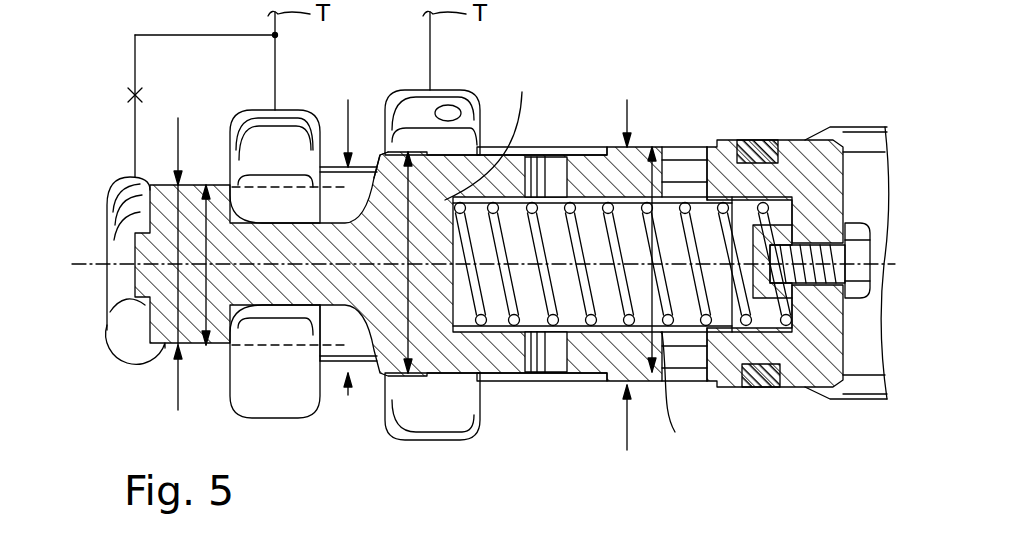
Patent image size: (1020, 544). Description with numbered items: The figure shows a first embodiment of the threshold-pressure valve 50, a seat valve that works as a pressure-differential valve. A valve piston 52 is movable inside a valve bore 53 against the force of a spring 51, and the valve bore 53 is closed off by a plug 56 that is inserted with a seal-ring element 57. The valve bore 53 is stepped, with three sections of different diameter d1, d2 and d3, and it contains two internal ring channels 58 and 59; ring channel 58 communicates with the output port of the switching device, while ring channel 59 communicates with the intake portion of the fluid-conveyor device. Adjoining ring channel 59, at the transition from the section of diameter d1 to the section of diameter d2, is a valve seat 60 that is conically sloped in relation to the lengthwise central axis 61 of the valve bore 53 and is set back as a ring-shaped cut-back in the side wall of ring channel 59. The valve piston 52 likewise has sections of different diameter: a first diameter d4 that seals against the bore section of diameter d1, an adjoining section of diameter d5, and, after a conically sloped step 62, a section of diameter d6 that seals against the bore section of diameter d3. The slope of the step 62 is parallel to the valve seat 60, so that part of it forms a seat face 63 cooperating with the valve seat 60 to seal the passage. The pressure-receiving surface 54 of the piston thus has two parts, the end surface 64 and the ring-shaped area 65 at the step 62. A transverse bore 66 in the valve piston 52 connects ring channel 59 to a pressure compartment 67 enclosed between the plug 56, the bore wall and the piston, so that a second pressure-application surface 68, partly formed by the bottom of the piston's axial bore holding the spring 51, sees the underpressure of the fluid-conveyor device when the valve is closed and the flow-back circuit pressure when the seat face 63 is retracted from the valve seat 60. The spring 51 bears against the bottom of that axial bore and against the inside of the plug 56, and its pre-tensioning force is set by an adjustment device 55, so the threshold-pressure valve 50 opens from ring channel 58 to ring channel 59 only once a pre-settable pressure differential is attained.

The threshold-pressure valve 50 is at (576, 133).
The spring 51 is at (683, 203).
The valve piston 52 is at (437, 328).
The valve bore 53 is at (500, 382).
The pressure-receiving surface 54 is at (130, 96).
The adjustment device 55 is at (822, 276).
The plug 56 is at (790, 370).
The seal-ring element 57 is at (758, 141).
The ring channel 58 is at (275, 264).
The ring channel 59 is at (417, 112).
The valve seat 60 is at (384, 150).
The lengthwise central axis 61 is at (94, 272).
The step 62 is at (365, 332).
The seat face 63 is at (398, 375).
The end surface 64 is at (140, 210).
The ring-shaped area 65 is at (368, 165).
The transverse bore 66 is at (556, 166).
The pressure compartment 67 is at (697, 157).
The second pressure-application surface 68 is at (570, 258).
The diameter of first bore section d1 is at (630, 100).
The diameter of second bore section d2 is at (345, 128).
The diameter of third bore section d3 is at (179, 135).
The first diameter of valve piston d4 is at (668, 370).
The diameter of further piston section d5 is at (410, 200).
The diameter of piston section after step d6 is at (214, 338).